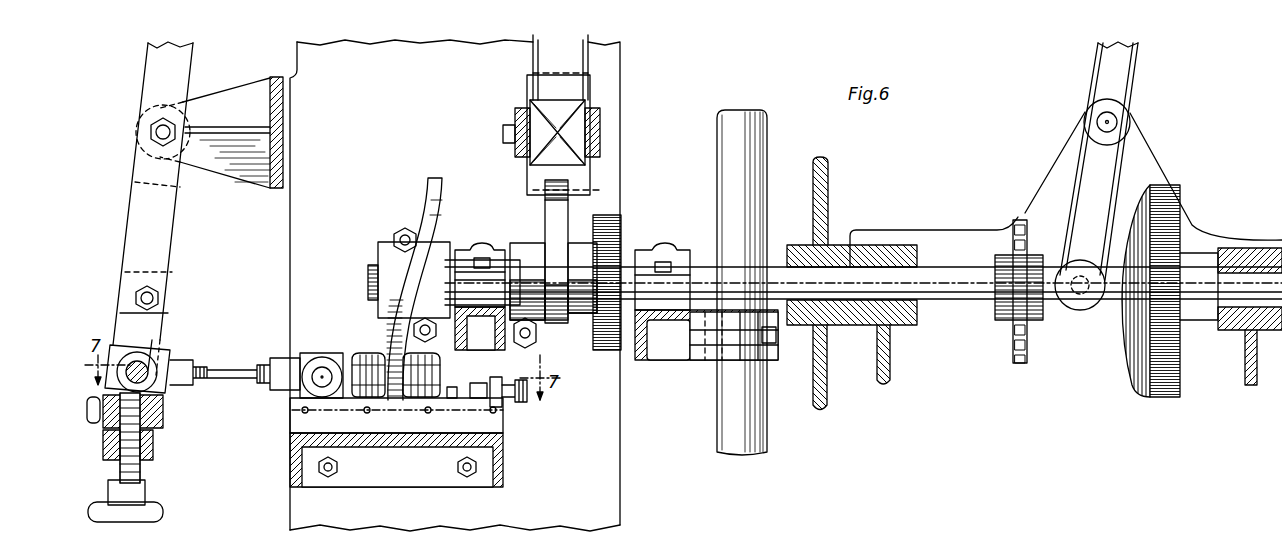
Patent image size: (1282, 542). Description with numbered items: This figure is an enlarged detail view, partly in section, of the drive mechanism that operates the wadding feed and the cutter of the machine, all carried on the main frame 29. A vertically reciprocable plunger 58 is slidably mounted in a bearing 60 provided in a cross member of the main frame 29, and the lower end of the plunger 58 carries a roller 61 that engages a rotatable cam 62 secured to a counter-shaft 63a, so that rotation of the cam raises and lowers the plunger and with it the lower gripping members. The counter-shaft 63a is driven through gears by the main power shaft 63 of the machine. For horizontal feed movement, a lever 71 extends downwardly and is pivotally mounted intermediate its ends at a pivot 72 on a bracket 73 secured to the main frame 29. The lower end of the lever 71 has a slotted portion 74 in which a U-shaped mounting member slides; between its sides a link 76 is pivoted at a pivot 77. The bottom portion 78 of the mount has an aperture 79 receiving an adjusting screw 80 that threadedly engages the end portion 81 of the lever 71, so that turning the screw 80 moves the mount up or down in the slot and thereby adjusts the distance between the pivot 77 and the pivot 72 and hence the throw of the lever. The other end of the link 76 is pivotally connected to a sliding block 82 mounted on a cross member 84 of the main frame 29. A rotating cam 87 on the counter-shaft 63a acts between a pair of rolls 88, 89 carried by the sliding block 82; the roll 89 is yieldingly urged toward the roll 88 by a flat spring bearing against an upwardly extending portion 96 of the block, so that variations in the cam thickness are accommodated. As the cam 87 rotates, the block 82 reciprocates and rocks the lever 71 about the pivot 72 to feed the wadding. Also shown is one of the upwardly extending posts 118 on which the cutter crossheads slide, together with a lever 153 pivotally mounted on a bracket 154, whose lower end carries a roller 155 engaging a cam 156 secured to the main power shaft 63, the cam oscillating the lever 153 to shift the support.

The main frame 29 is at (313, 222).
The vertically reciprocable plunger 58 is at (535, 65).
The bearing 60 is at (513, 158).
The roller 61 is at (556, 190).
The rotatable cam 62 is at (555, 300).
The main power shaft 63 is at (960, 300).
The counter-shaft 63a is at (376, 280).
The lever 71 is at (160, 67).
The pivot 72 is at (152, 133).
The bracket 73 is at (232, 98).
The slotted portion 74 is at (158, 332).
The link 76 is at (218, 370).
The pivot 77 is at (150, 382).
The bottom portion 78 is at (165, 420).
The aperture 79 is at (150, 437).
The adjusting screw 80 is at (142, 482).
The end portion 81 is at (108, 450).
The sliding block 82 is at (350, 412).
The cross member 84 is at (503, 475).
The rotating cam 87 is at (432, 200).
The roll 88 is at (368, 382).
The roll 89 is at (428, 385).
The upwardly extending portion 96 is at (505, 400).
The post 118 is at (735, 190).
The lever 153 is at (1108, 78).
The bracket 154 is at (1060, 170).
The roller 155 is at (1078, 311).
The cam 156 is at (1135, 372).